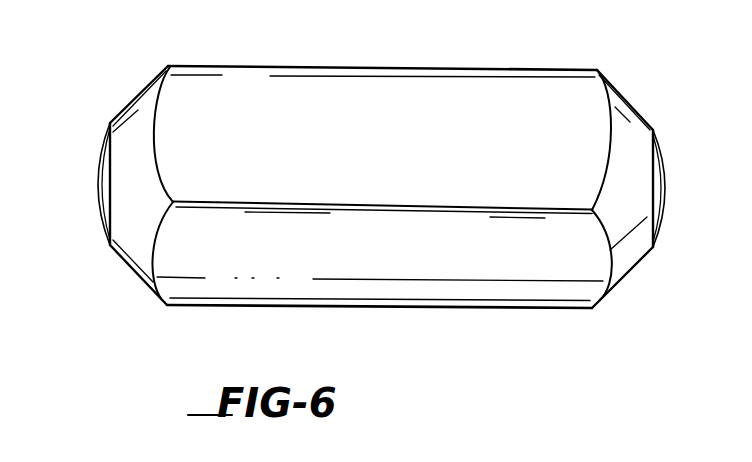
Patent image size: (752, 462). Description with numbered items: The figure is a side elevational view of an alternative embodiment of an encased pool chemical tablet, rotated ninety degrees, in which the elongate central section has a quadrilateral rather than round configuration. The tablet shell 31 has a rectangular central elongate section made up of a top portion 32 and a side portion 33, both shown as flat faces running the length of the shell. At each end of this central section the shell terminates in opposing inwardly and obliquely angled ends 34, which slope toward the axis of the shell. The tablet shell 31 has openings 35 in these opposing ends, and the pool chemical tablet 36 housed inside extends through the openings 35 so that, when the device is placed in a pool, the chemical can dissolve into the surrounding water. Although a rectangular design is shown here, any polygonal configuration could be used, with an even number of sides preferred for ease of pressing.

The tablet shell 31 is at (400, 66).
The top portion 32 is at (414, 162).
The side portion 33 is at (424, 271).
The inwardly and obliquely angled ends 34 is at (132, 102).
The openings 35 is at (108, 205).
The pool chemical tablet 36 is at (105, 180).